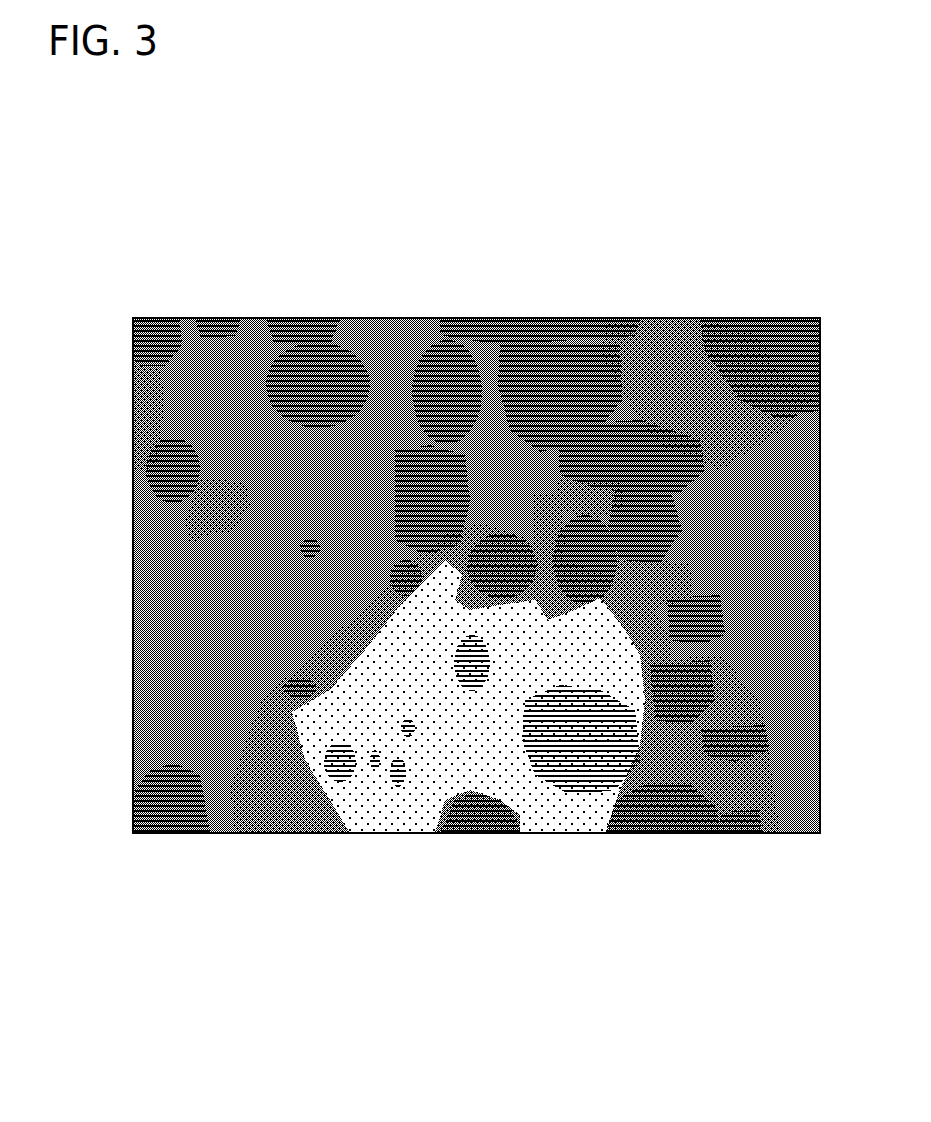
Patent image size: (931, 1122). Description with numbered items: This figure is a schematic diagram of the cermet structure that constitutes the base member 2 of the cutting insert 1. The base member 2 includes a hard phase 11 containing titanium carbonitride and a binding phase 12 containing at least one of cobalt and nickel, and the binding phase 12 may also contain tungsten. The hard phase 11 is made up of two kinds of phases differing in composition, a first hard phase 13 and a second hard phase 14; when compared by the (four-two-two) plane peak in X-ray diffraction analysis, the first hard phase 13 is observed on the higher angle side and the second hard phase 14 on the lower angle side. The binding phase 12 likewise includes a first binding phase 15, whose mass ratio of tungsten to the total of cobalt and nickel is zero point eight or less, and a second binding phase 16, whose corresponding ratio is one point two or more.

The cutting insert 1 is at (476, 576).
The base member 2 is at (476, 576).
The hard phase 11 is at (192, 908).
The binding phase 12 is at (588, 917).
The first hard phase 13 is at (187, 830).
The second hard phase 14 is at (277, 830).
The first binding phase 15 is at (723, 832).
The second binding phase 16 is at (572, 820).